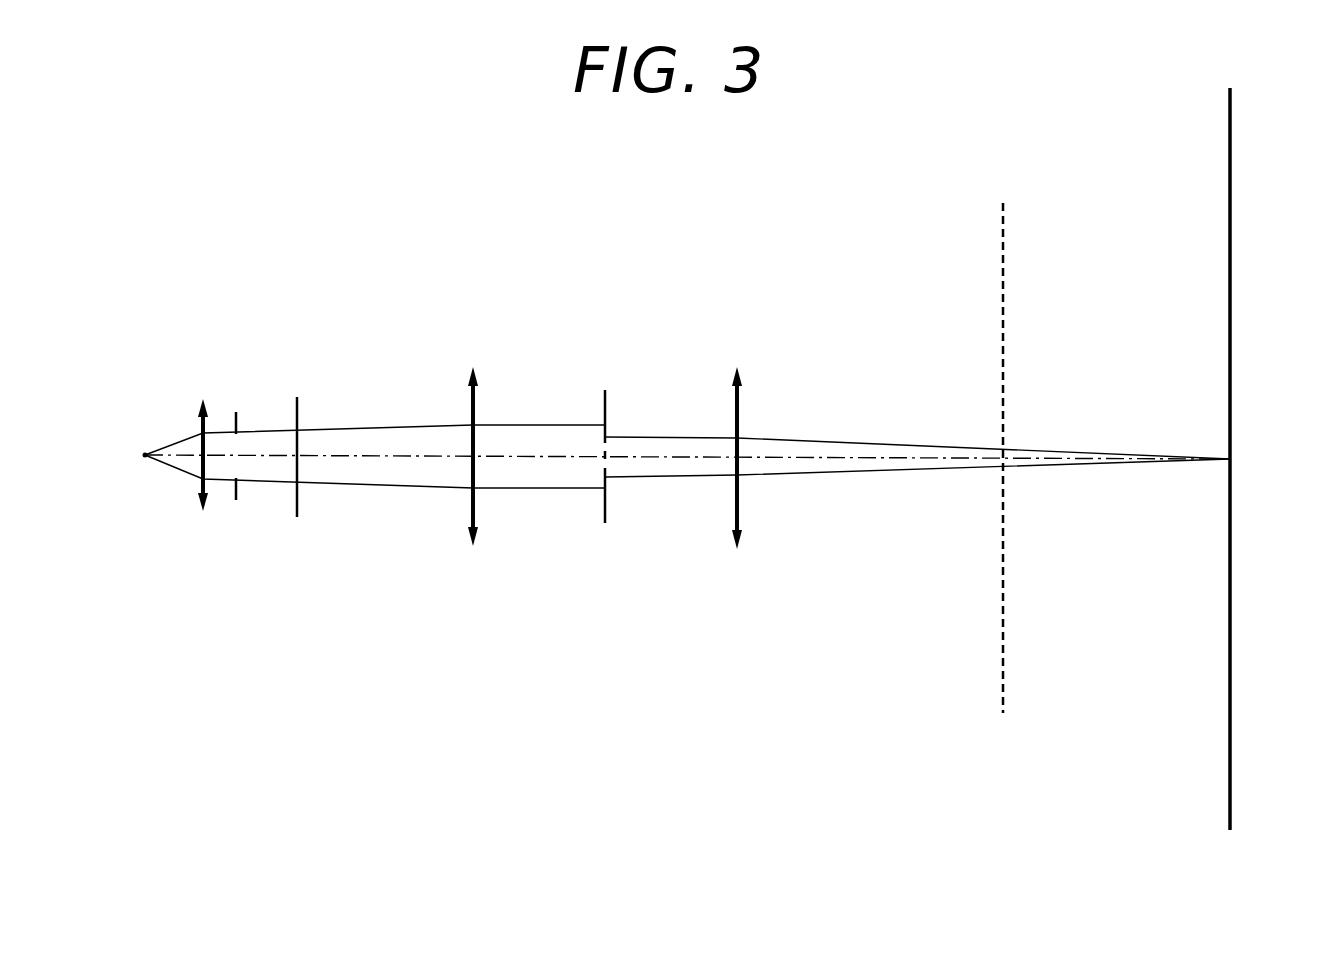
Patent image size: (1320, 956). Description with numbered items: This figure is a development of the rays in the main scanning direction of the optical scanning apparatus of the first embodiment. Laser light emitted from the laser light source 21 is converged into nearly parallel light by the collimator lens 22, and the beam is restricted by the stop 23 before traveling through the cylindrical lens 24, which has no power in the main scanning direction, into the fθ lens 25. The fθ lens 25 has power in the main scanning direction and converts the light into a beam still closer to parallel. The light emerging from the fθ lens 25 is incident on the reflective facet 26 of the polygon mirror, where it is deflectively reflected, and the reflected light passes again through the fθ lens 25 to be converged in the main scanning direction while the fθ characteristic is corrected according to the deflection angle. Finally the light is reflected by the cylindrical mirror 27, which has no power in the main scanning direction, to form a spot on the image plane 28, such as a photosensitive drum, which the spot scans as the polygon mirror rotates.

The laser light source 21 is at (145, 452).
The collimator lens 22 is at (206, 412).
The stop 23 is at (238, 426).
The cylindrical lens 24 is at (299, 410).
The fθ lens 25 is at (477, 377).
The reflective facet of the scanning mirror 26 is at (607, 455).
The cylindrical mirror 27 is at (1004, 250).
The image plane 28 is at (1232, 138).